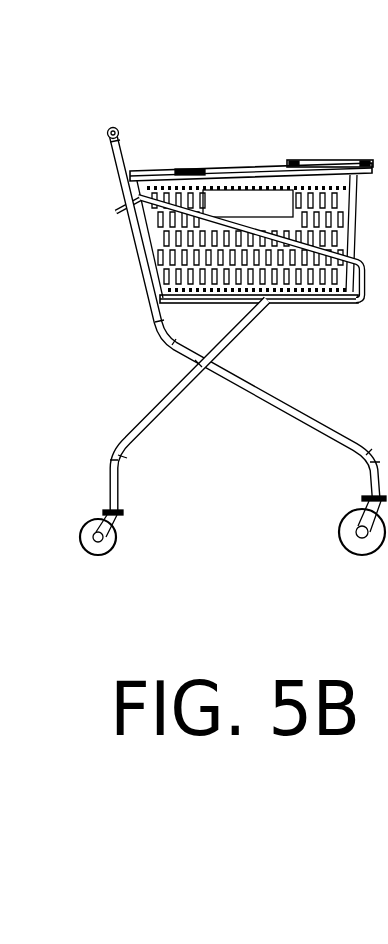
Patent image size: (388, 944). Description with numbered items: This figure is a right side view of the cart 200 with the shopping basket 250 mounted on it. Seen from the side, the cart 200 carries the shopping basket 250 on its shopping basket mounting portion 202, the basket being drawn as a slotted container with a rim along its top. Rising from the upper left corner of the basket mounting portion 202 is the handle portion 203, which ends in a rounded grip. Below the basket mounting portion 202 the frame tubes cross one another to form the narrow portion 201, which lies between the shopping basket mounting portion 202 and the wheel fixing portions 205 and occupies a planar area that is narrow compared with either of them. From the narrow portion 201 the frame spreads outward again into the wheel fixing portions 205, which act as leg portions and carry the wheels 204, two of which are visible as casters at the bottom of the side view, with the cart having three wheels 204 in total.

The cart 200 is at (212, 130).
The narrow portion 201 is at (203, 368).
The shopping basket mounting portion 202 is at (333, 304).
The handle portion 203 is at (110, 128).
The wheels 204 is at (117, 537).
The wheel fixing portions 205 is at (143, 422).
The shopping basket 250 is at (319, 160).